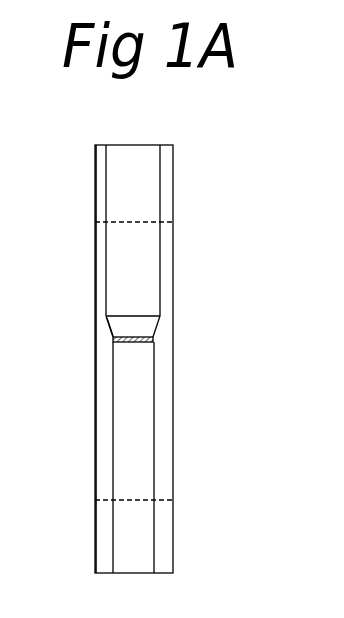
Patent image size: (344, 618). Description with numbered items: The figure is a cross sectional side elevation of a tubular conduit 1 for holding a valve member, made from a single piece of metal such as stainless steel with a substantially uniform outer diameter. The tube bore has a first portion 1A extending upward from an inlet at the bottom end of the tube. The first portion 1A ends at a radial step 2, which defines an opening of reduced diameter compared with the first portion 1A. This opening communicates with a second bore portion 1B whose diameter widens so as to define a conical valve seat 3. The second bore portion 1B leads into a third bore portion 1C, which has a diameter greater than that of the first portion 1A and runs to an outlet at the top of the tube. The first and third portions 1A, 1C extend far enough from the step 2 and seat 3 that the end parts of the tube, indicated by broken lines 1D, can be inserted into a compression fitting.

The tubular conduit 1 is at (238, 259).
The first portion 1A is at (133, 470).
The second bore portion 1B is at (148, 323).
The third bore portion 1C is at (148, 199).
The broken lines 1D is at (173, 222).
The radial step 2 is at (112, 339).
The conical valve seat 3 is at (112, 333).